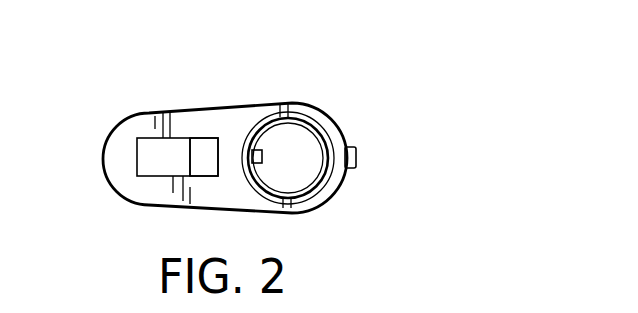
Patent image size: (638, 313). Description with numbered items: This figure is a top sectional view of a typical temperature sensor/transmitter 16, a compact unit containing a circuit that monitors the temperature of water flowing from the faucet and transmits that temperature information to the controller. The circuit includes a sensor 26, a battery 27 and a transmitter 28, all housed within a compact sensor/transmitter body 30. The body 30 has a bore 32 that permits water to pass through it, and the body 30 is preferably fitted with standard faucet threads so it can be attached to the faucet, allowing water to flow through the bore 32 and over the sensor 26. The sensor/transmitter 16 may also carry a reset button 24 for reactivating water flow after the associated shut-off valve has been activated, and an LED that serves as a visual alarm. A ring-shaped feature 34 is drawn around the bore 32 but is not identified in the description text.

The housing assembly 16 is at (116, 96).
The locking tab 24 is at (356, 157).
The keyway notch 26 is at (262, 152).
The partition 27 is at (210, 170).
The latch block 28 is at (177, 138).
The housing 30 is at (233, 120).
The inner ring 32 is at (306, 180).
The outer ring 34 is at (315, 132).